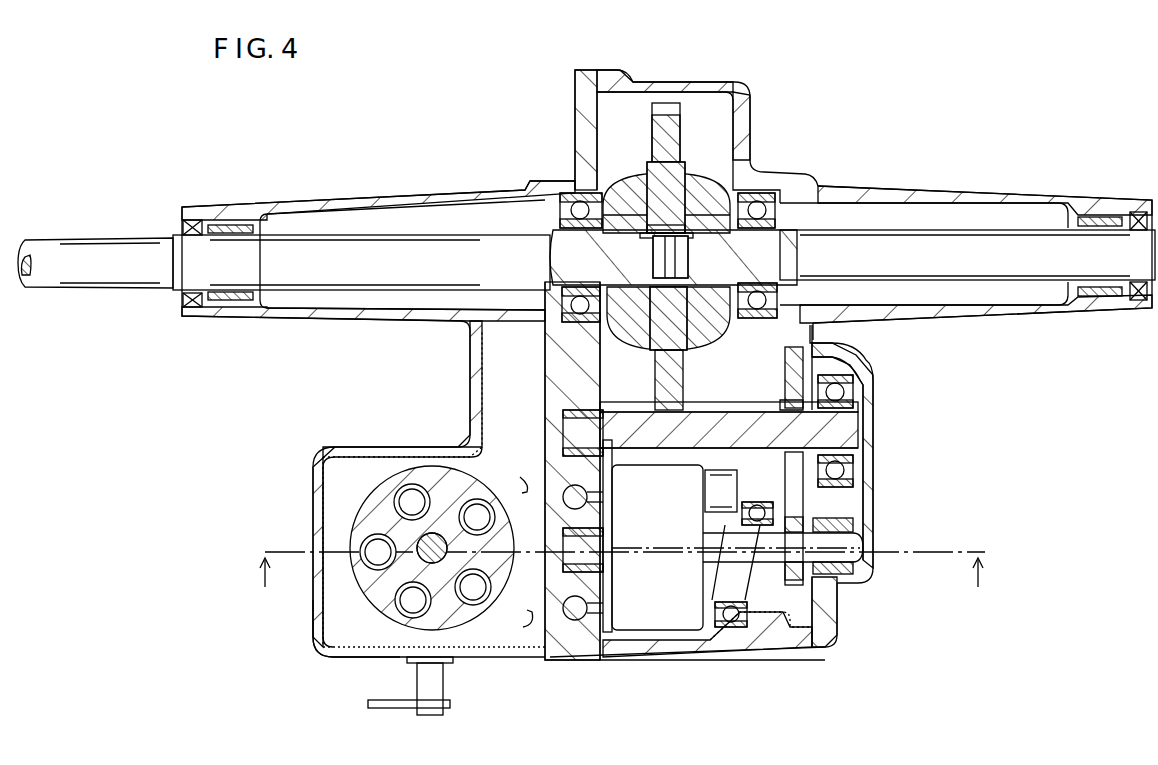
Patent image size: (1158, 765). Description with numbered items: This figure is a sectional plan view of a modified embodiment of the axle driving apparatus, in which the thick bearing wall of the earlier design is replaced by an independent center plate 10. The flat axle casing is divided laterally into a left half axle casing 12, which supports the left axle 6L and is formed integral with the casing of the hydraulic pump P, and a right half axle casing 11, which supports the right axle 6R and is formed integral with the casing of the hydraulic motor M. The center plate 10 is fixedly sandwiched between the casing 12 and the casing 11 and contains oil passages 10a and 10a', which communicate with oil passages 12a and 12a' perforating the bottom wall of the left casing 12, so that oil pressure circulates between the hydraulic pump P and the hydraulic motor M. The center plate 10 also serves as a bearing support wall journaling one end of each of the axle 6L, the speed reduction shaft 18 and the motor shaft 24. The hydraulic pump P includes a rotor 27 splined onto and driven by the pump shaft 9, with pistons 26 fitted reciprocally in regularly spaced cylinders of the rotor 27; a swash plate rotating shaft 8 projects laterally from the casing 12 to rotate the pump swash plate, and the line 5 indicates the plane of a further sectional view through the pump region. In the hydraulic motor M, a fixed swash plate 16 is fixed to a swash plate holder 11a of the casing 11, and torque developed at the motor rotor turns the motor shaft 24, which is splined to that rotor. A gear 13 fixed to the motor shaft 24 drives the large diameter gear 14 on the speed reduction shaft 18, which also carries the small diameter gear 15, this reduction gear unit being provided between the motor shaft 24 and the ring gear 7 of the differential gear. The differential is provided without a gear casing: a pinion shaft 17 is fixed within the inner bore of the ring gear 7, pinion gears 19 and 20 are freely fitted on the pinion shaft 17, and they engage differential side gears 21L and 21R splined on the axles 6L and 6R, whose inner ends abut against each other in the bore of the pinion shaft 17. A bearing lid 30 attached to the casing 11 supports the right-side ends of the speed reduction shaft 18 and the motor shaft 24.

The section line 5- 5 is at (621, 588).
The axle 6L is at (100, 240).
The axle 6R is at (898, 208).
The ring gear 7 is at (680, 119).
The swash plate rotating shaft 8 is at (447, 670).
The pump shaft 9 is at (440, 537).
The center plate 10 is at (575, 122).
The oil passage 10a is at (616, 610).
The oil passage 10a' is at (618, 499).
The second axle casing 11 is at (960, 190).
The swash plate holder 11a is at (785, 493).
The first axle casing 12 is at (352, 200).
The oil passage 12a is at (507, 630).
The oil passage 12a' is at (515, 474).
The gear 13 is at (810, 575).
The large diameter gear 14 is at (783, 363).
The small diameter gear 15 is at (775, 405).
The fixed swash plate 16 is at (725, 603).
The pinion shaft 17 is at (666, 197).
The speed reduction shaft 18 is at (852, 435).
The pinion gear 19 is at (700, 173).
The pinion gear 20 is at (703, 335).
The differential side gear 21L is at (602, 193).
The differential side gear 21R is at (752, 170).
The motor shaft 24 is at (855, 558).
The piston 26 is at (370, 585).
The rotor 27 is at (367, 510).
The bearing lid 30 is at (872, 505).
The hydraulic motor M is at (668, 632).
The hydraulic pump P is at (372, 625).